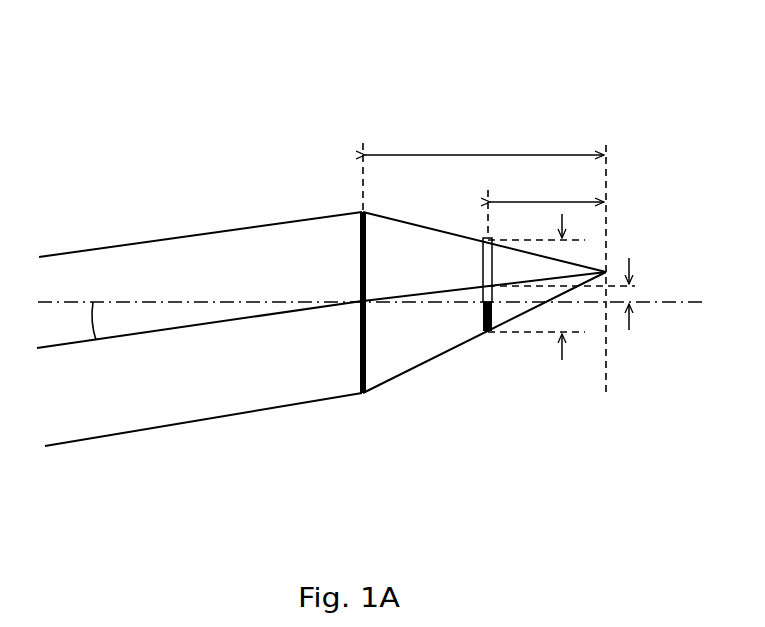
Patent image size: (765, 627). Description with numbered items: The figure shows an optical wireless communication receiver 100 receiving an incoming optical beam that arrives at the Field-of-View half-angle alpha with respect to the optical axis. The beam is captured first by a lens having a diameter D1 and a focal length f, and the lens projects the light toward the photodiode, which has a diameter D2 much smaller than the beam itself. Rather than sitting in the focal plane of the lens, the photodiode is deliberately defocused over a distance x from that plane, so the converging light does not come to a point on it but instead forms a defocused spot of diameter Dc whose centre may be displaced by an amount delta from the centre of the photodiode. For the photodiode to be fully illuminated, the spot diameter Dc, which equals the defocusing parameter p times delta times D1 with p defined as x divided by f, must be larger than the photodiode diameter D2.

The optical system 100 is at (176, 80).
The lens diameter D1 is at (330, 482).
The photodiode diameter D2 is at (450, 474).
The defocused spot diameter Dc is at (531, 423).
The focal length f is at (483, 170).
The defocusing distance x is at (546, 207).